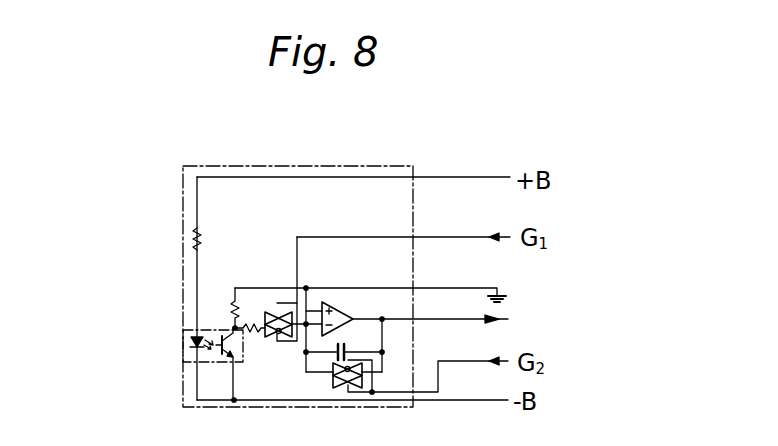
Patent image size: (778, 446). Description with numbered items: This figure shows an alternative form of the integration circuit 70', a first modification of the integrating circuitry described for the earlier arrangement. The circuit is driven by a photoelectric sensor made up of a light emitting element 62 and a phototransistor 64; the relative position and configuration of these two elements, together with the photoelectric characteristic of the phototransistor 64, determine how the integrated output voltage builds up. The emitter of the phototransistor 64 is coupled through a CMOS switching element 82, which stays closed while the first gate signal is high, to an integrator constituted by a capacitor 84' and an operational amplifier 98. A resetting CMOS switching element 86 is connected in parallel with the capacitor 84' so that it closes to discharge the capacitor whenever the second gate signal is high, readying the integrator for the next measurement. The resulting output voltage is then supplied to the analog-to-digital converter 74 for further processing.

The light emitting element 62 is at (190, 343).
The phototransistor 64 is at (215, 330).
The integration circuit 70' is at (333, 286).
The CMOS switching element 82 is at (270, 338).
The capacitor 84' is at (358, 329).
The resetting CMOS switching element 86 is at (335, 380).
The operational amplifier 98 is at (335, 308).
The analog-to-digital converter 74 is at (493, 320).